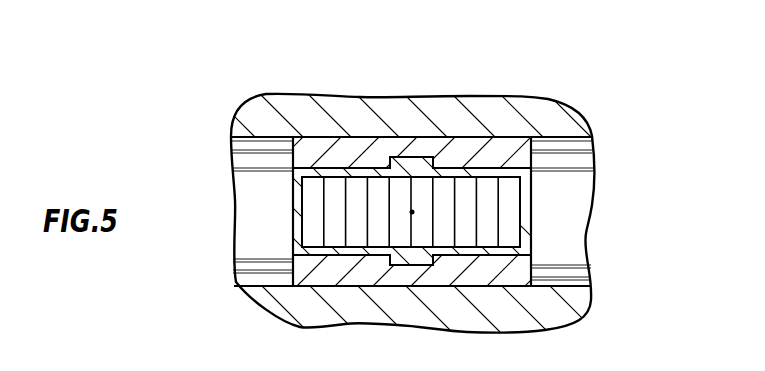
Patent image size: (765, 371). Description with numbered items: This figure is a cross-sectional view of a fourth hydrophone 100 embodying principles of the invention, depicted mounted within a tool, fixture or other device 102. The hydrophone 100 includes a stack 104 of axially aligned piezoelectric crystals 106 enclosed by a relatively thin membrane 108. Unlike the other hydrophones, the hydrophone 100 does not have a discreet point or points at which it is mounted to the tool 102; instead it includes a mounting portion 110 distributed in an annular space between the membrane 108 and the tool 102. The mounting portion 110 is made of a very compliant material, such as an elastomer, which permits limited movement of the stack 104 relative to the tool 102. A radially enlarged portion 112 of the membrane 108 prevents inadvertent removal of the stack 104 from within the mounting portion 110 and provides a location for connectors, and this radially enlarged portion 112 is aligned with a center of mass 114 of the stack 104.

The hydrophone 100 is at (538, 182).
The tool 102 is at (570, 287).
The stack 104 is at (288, 215).
The piezoelectric crystals 106 is at (330, 257).
The membrane 108 is at (293, 192).
The mounting portion 110 is at (508, 136).
The radially enlarged portion 112 is at (418, 157).
The center of mass 114 is at (412, 215).